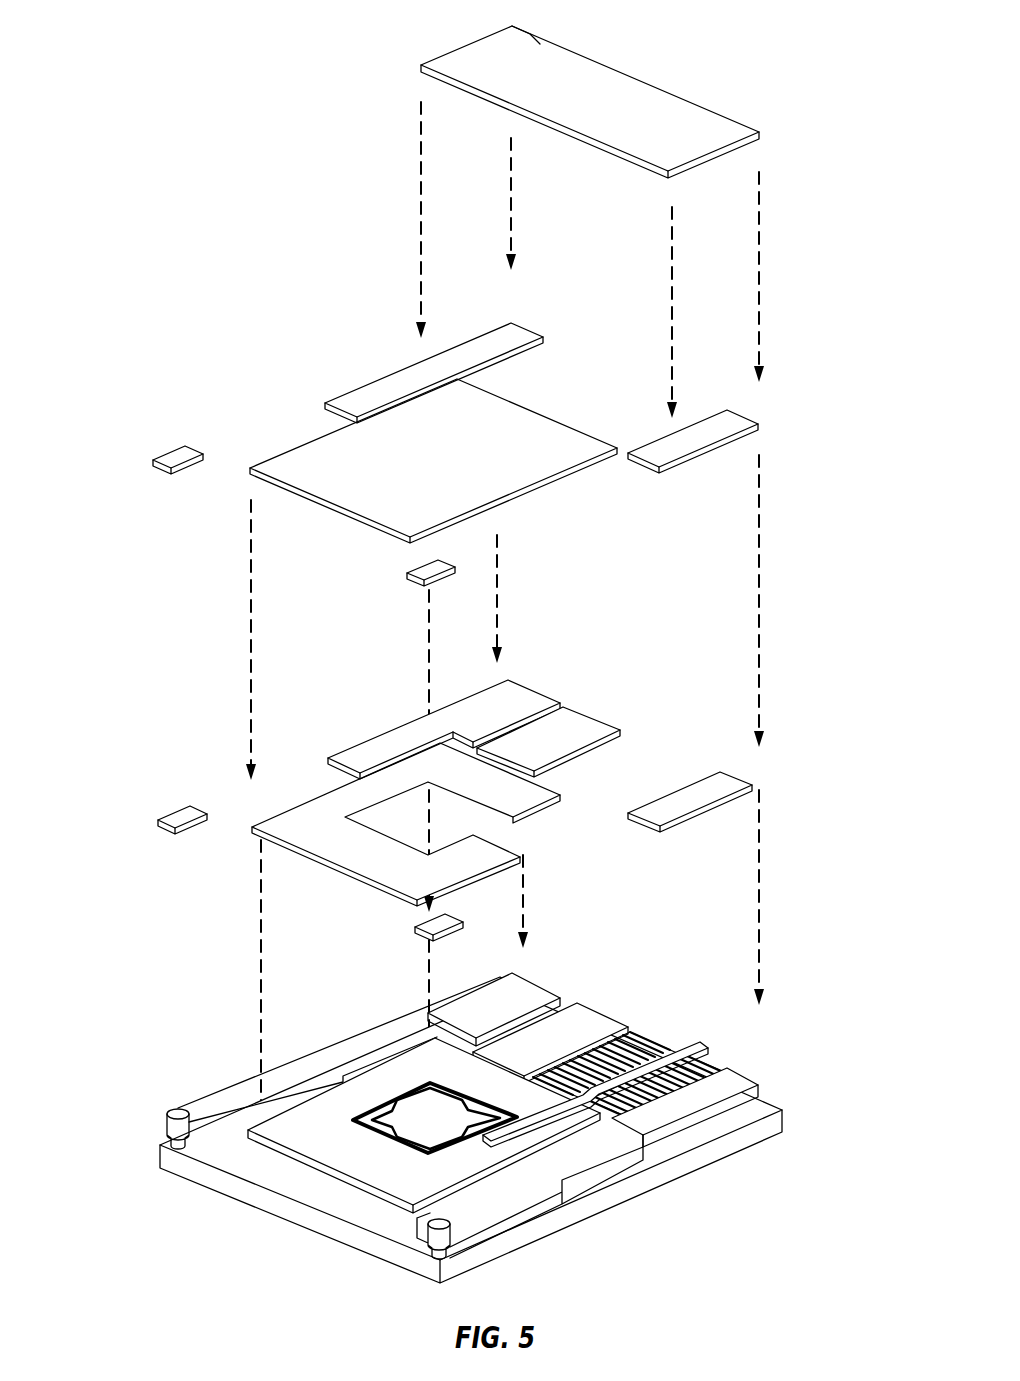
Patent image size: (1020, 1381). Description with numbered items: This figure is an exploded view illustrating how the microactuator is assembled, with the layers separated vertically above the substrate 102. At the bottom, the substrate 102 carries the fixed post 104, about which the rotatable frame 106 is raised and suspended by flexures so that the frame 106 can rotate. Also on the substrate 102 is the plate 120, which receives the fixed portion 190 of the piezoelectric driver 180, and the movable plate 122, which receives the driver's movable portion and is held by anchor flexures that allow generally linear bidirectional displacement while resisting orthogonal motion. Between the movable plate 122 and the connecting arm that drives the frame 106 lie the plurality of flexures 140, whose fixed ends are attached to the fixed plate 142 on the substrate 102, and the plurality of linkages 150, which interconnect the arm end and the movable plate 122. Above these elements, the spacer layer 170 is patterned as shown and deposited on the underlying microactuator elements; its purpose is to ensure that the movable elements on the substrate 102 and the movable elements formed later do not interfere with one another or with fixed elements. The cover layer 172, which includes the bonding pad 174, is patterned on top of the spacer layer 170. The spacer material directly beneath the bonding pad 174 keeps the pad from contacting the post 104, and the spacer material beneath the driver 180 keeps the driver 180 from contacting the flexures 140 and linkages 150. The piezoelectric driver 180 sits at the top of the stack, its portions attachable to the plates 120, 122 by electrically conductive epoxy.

The substrate 102 is at (727, 1148).
The post 104 is at (410, 1092).
The rotatable frame 106 is at (322, 1142).
The plate 120 is at (522, 988).
The movable plate 122 is at (740, 1083).
The flexures 140 is at (636, 1035).
The fixed plate 142 is at (580, 1012).
The linkages 150 is at (695, 1060).
The spacer layer 170 is at (128, 733).
The cover layer 172 is at (128, 345).
The bonding pad 174 is at (310, 450).
The piezoelectric driver 180 is at (665, 100).
The fixed portion 190 is at (567, 50).